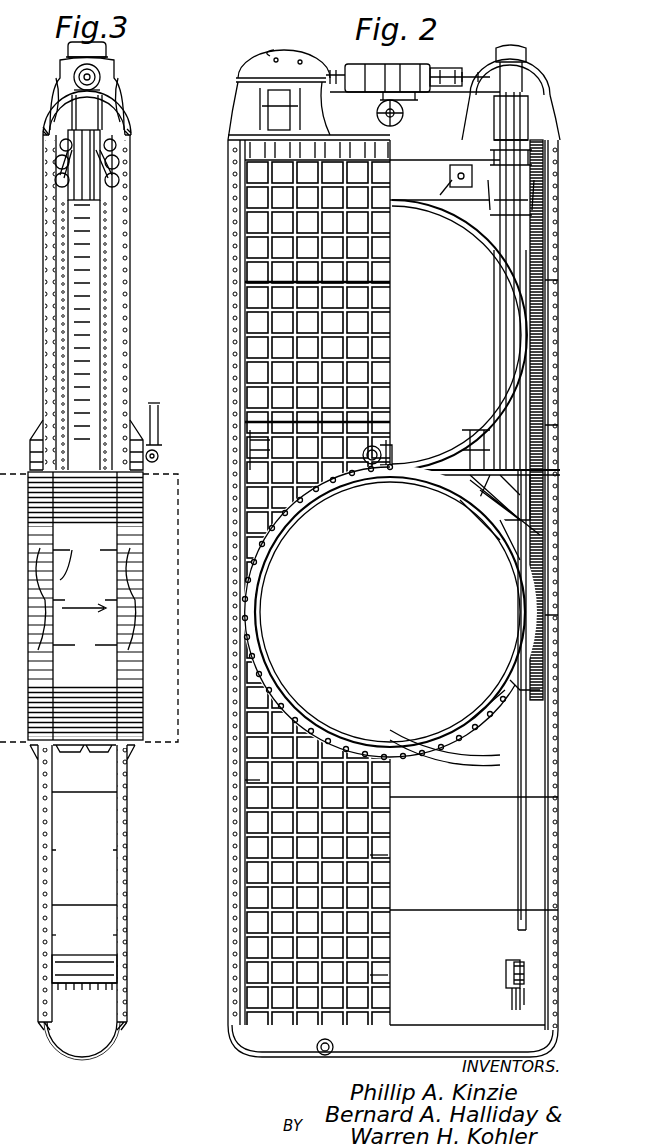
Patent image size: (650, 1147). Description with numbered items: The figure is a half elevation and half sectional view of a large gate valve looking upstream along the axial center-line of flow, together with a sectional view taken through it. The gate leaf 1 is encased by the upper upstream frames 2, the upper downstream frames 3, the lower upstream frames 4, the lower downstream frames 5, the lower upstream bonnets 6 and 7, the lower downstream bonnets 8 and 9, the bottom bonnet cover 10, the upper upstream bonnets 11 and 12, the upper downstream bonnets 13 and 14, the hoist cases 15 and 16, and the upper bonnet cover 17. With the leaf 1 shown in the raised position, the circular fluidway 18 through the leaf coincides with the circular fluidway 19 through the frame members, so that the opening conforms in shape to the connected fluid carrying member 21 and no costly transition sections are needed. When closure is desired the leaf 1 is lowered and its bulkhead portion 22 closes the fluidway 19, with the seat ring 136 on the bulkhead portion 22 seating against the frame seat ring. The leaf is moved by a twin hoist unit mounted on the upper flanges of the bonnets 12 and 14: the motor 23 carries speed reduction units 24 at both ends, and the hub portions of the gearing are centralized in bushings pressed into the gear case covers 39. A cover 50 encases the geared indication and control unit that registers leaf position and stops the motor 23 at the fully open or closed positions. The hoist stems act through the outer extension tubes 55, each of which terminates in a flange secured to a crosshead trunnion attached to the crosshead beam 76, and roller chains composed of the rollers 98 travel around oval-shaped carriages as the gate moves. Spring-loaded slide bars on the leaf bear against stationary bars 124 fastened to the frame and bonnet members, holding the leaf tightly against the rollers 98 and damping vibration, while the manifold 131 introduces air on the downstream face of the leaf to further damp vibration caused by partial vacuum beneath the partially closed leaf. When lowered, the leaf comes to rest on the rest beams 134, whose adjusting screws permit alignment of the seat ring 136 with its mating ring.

In FIG. 3, the leaf 1 is at (86, 280).
In FIG. 2, the leaf 1 is at (445, 520).
In FIG. 3, the upper upstream frames 2 is at (30, 445).
In FIG. 3, the upper downstream frames 3 is at (143, 518).
In FIG. 2, the upper downstream frames 3 is at (232, 488).
In FIG. 3, the lower upstream frames 4 is at (38, 782).
In FIG. 2, the lower upstream frames 4 is at (484, 776).
In FIG. 3, the lower downstream frames 5 is at (128, 781).
In FIG. 2, the lower downstream frames 5 is at (240, 780).
In FIG. 3, the lower upstream bonnet 6 is at (44, 855).
In FIG. 2, the lower upstream bonnet 6 is at (484, 838).
In FIG. 3, the lower upstream bonnet 7 is at (44, 952).
In FIG. 2, the lower upstream bonnet 7 is at (470, 972).
In FIG. 3, the lower downstream bonnet 8 is at (128, 857).
In FIG. 2, the lower downstream bonnet 8 is at (378, 856).
In FIG. 3, the lower downstream bonnet 9 is at (128, 954).
In FIG. 2, the lower downstream bonnet 9 is at (378, 976).
In FIG. 3, the bottom bonnet cover 10 is at (70, 1058).
In FIG. 2, the bottom bonnet cover 10 is at (298, 1045).
In FIG. 3, the upper upstream bonnet 11 is at (48, 360).
In FIG. 3, the upper upstream bonnet 12 is at (44, 240).
In FIG. 3, the upper downstream bonnet 13 is at (128, 357).
In FIG. 2, the upper downstream bonnet 13 is at (236, 365).
In FIG. 3, the upper downstream bonnet 14 is at (128, 236).
In FIG. 2, the upper downstream bonnet 14 is at (236, 178).
In FIG. 2, the hoist case 15 is at (244, 100).
In FIG. 3, the hoist case 16 is at (122, 85).
In FIG. 2, the hoist case 16 is at (534, 118).
In FIG. 3, the upper bonnet cover 17 is at (56, 115).
In FIG. 2, the upper bonnet cover 17 is at (372, 116).
In FIG. 3, the circular fluidway 18 is at (100, 590).
In FIG. 2, the circular fluidway 18 is at (502, 546).
In FIG. 3, the circular fluidway 19 is at (88, 599).
In FIG. 2, the circular fluidway 19 is at (330, 656).
In FIG. 3, the fluid carrying member 21 is at (178, 553).
In FIG. 2, the bulkhead portion 22 is at (418, 290).
In FIG. 3, the motor 23 is at (74, 70).
In FIG. 2, the motor 23 is at (418, 66).
In FIG. 2, the speed reduction units 24 is at (355, 70).
In FIG. 2, the gear case cover 39 is at (270, 58).
In FIG. 3, the cover 50 is at (108, 55).
In FIG. 2, the outer extension tube 55 is at (480, 450).
In FIG. 2, the crosshead beam 76 is at (436, 168).
In FIG. 2, the rollers 98 is at (548, 445).
In FIG. 2, the stationary bars 124 is at (518, 882).
In FIG. 3, the manifold 131 is at (158, 456).
In FIG. 2, the manifold 131 is at (392, 452).
In FIG. 3, the rest beams 134 is at (128, 977).
In FIG. 2, the rest beams 134 is at (506, 982).
In FIG. 2, the seat ring 136 is at (480, 226).